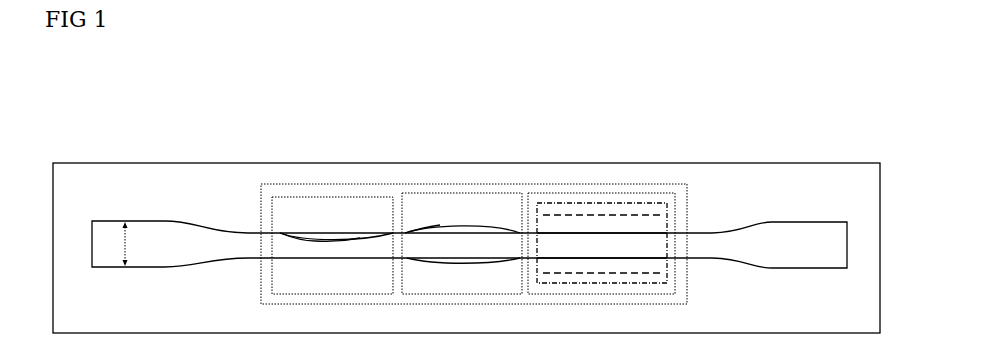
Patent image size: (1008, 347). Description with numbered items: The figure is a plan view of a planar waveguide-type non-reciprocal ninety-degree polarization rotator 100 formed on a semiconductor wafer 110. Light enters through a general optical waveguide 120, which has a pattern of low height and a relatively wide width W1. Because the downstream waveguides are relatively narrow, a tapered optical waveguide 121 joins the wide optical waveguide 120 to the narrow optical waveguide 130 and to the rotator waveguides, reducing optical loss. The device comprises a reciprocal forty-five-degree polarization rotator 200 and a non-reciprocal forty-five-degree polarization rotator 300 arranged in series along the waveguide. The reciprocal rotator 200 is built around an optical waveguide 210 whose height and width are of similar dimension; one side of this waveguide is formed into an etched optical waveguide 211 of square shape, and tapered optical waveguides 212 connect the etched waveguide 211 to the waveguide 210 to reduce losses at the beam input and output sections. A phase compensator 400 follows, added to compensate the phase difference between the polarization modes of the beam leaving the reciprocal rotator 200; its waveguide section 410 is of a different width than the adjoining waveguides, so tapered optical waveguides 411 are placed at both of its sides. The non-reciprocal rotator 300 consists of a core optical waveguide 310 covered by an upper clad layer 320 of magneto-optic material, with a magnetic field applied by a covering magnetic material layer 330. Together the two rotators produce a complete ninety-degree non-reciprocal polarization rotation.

The planar waveguide-type non-reciprocal 90° polarization rotator 100 is at (466, 223).
The semiconductor wafer 110 is at (466, 248).
The optical waveguide 120 is at (468, 235).
The tapered optical waveguide 121 is at (468, 237).
The optical waveguide 130 is at (470, 256).
The width of optical waveguide W1 is at (140, 244).
The reciprocal 45° polarization rotator 200 is at (352, 192).
The optical waveguide 210 is at (336, 256).
The etched optical waveguide 211 is at (332, 237).
The tapered optical waveguides 212 is at (303, 232).
The non-reciprocal 45° polarization rotator 300 is at (600, 193).
The core optical waveguide 310 is at (602, 245).
The upper clad layer 320 is at (601, 244).
The magnetic material layer 330 is at (653, 203).
The phase compensator 400 is at (487, 194).
The bulged channel portion 410 is at (462, 259).
The tapered optical waveguides 411 is at (418, 229).